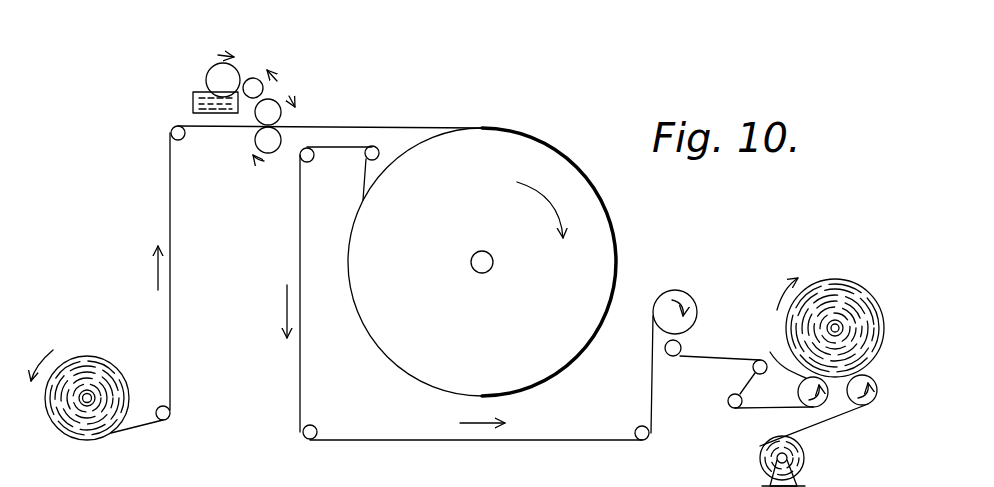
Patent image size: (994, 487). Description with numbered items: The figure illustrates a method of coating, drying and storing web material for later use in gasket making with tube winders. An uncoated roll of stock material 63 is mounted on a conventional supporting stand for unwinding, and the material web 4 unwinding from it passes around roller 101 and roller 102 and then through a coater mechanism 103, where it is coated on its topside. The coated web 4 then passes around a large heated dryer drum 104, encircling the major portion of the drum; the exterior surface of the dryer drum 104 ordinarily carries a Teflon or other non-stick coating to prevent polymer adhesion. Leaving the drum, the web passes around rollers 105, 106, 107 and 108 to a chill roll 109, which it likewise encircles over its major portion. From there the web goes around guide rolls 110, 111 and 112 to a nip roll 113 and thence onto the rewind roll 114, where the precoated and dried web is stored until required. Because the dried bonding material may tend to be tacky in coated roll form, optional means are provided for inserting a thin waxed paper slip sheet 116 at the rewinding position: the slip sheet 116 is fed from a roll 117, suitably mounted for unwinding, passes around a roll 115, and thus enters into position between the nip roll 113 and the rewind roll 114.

The material web 4 is at (170, 204).
The uncoated roll of stock material 63 is at (80, 356).
The roller 101 is at (163, 406).
The roller 102 is at (183, 139).
The coater mechanism 103 is at (251, 63).
The heated dryer drum 104 is at (408, 147).
The roller 105 is at (367, 160).
The roller 106 is at (300, 158).
The roller 107 is at (318, 427).
The roller 108 is at (636, 430).
The chill roll 109 is at (663, 334).
The guide roll 110 is at (682, 338).
The guide roll 111 is at (752, 368).
The guide roll 112 is at (731, 405).
The nip roll 113 is at (766, 351).
The rewind roll 114 is at (880, 251).
The roll 115 is at (866, 405).
The slip sheet 116 is at (813, 427).
The roll 117 is at (763, 458).